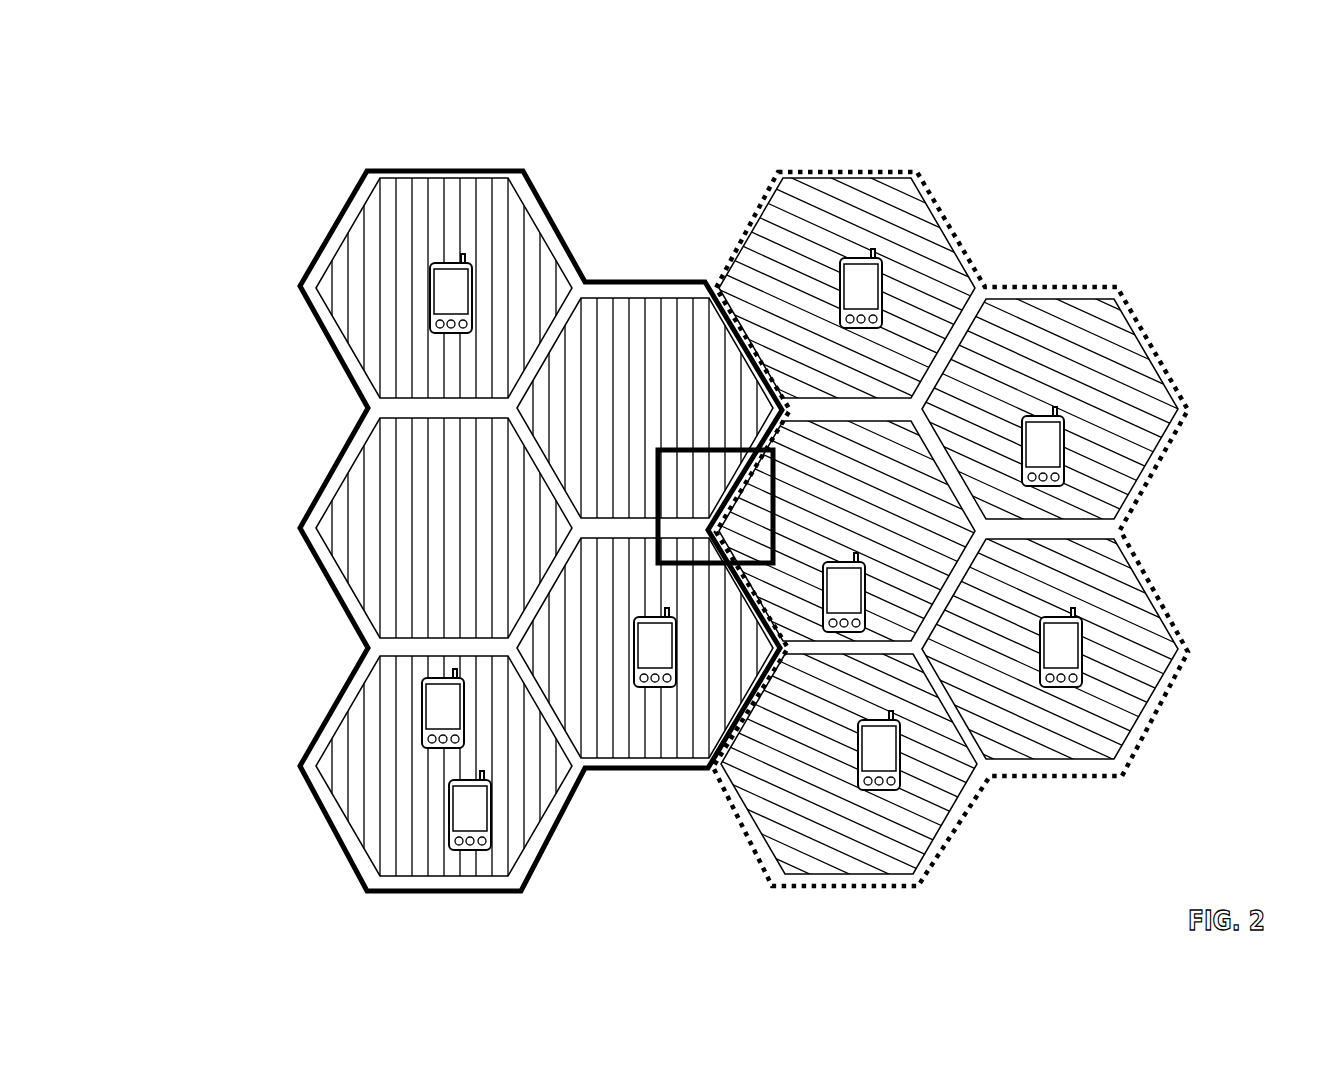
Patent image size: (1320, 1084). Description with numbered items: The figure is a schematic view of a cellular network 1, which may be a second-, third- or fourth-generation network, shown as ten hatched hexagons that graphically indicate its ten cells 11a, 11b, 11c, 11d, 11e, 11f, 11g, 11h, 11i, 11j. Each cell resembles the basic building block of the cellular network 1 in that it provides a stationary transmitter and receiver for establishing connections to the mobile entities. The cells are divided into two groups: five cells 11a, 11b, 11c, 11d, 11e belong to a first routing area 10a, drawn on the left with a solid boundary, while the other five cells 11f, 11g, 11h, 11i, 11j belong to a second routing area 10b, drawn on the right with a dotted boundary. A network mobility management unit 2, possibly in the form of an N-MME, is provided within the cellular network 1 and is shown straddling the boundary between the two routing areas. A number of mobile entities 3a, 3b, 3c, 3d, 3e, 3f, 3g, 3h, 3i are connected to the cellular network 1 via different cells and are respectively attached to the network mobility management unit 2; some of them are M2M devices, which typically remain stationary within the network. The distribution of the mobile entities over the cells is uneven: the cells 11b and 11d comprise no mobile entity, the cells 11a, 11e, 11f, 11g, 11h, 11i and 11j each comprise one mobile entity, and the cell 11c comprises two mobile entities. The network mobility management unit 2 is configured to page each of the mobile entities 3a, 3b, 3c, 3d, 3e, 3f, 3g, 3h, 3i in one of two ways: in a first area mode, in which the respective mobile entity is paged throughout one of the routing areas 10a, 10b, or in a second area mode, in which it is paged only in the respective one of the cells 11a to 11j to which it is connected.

The cellular network 1 is at (198, 138).
The network mobility management unit 2 is at (680, 448).
The first routing area 10a is at (500, 169).
The second routing area 10b is at (890, 170).
The cell 11a is at (362, 212).
The cell 11b is at (362, 452).
The cell 11c is at (362, 835).
The cell 11d is at (562, 336).
The cell 11e is at (563, 579).
The cell 11f is at (763, 218).
The cell 11g is at (773, 442).
The cell 11h is at (767, 689).
The cell 11i is at (965, 343).
The cell 11j is at (967, 575).
The mobile entity 3a is at (460, 281).
The mobile entity 3b is at (450, 699).
The mobile entity 3c is at (478, 802).
The mobile entity 3d is at (662, 635).
The mobile entity 3e is at (868, 272).
The mobile entity 3f is at (1050, 440).
The mobile entity 3g is at (852, 583).
The mobile entity 3h is at (887, 735).
The mobile entity 3i is at (1068, 635).